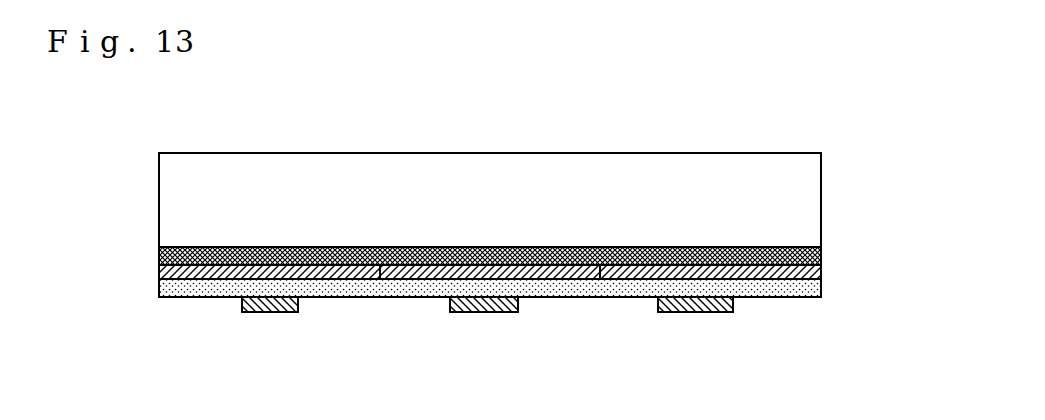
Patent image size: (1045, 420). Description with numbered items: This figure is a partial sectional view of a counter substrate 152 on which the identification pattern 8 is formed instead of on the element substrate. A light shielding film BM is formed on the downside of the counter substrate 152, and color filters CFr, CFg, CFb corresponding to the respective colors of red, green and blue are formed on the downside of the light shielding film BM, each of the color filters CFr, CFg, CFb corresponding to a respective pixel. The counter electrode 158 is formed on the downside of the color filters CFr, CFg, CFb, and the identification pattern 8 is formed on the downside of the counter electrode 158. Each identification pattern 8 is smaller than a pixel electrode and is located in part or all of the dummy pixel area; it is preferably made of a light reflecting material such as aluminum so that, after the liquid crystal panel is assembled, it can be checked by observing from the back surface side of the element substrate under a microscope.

The counter substrate 152 is at (821, 203).
The light shielding film BM is at (821, 253).
The red color filter CFr is at (338, 268).
The green color filter CFg is at (575, 268).
The blue color filter CFb is at (788, 268).
The counter electrode 158 is at (821, 288).
The identification pattern 8 is at (273, 312).